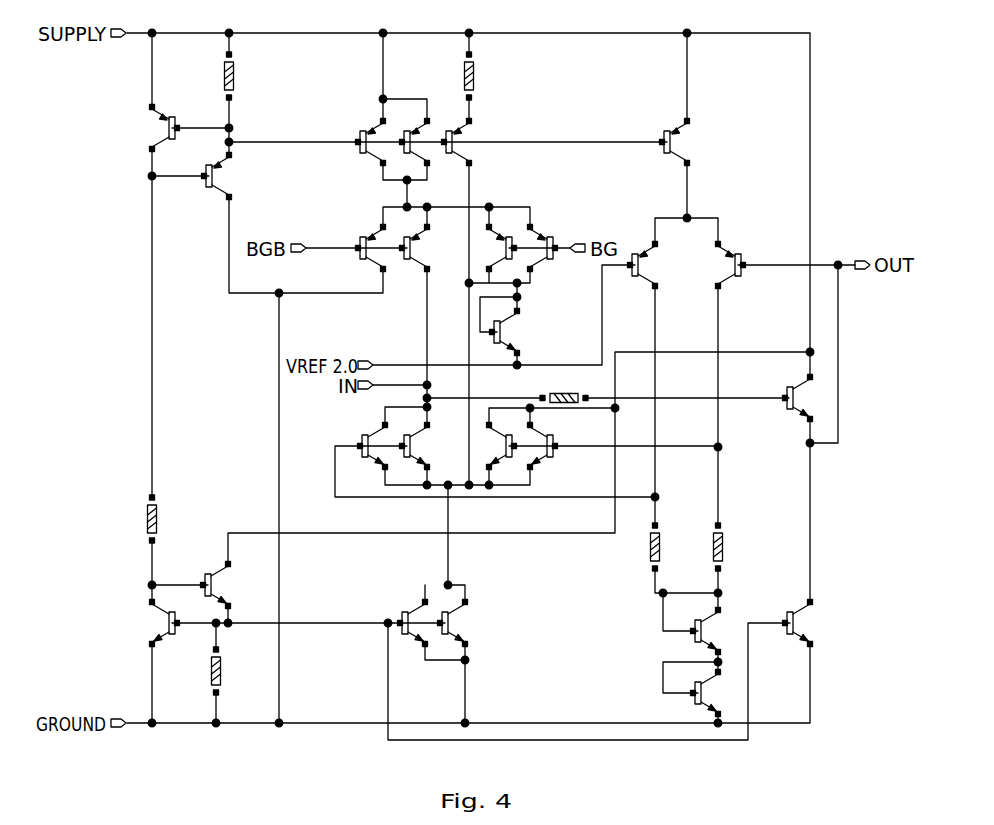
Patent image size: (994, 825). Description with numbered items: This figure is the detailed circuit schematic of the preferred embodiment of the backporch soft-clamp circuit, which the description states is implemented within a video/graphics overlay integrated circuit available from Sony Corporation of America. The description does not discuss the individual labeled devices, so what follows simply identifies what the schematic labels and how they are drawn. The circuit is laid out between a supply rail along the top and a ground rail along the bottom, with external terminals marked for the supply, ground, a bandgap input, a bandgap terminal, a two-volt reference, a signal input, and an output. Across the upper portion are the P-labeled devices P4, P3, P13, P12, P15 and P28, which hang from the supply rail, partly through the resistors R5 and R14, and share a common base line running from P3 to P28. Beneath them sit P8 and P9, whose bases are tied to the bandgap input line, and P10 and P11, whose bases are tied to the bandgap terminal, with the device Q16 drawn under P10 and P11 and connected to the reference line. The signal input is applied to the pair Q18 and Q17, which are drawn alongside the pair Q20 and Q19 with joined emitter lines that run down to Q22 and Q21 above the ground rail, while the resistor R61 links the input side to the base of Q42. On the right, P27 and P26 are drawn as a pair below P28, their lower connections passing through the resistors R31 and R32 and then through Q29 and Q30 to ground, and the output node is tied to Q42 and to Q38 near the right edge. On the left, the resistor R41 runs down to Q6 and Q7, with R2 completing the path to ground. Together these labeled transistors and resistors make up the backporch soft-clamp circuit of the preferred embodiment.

The PNP transistor P3 is at (216, 176).
The PNP transistor P4 is at (167, 122).
The PNP transistor P8 is at (371, 250).
The PNP transistor P9 is at (414, 250).
The PNP transistor P10 is at (505, 250).
The PNP transistor P11 is at (547, 250).
The PNP transistor P12 is at (410, 144).
The PNP transistor P13 is at (366, 144).
The PNP transistor P15 is at (452, 144).
The PNP transistor P26 is at (737, 268).
The PNP transistor P27 is at (637, 268).
The PNP transistor P28 is at (669, 141).
The NPN transistor Q6 is at (213, 581).
The NPN transistor Q7 is at (166, 620).
The NPN transistor Q16 is at (518, 332).
The NPN transistor Q17 is at (409, 441).
The NPN transistor Q18 is at (367, 441).
The NPN transistor Q19 is at (547, 454).
The NPN transistor Q20 is at (506, 454).
The NPN transistor Q21 is at (466, 623).
The NPN transistor Q22 is at (407, 618).
The NPN transistor Q29 is at (718, 631).
The NPN transistor Q30 is at (718, 693).
The NPN transistor Q38 is at (791, 618).
The NPN transistor Q42 is at (791, 402).
The resistor R2 is at (232, 671).
The resistor R5 is at (244, 76).
The resistor R14 is at (491, 76).
The resistor R31 is at (675, 547).
The resistor R32 is at (738, 547).
The resistor R41 is at (173, 519).
The resistor R61 is at (564, 388).